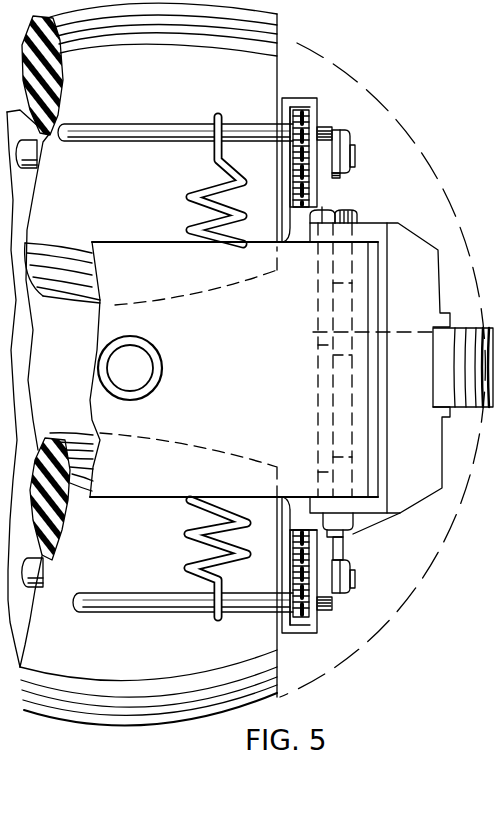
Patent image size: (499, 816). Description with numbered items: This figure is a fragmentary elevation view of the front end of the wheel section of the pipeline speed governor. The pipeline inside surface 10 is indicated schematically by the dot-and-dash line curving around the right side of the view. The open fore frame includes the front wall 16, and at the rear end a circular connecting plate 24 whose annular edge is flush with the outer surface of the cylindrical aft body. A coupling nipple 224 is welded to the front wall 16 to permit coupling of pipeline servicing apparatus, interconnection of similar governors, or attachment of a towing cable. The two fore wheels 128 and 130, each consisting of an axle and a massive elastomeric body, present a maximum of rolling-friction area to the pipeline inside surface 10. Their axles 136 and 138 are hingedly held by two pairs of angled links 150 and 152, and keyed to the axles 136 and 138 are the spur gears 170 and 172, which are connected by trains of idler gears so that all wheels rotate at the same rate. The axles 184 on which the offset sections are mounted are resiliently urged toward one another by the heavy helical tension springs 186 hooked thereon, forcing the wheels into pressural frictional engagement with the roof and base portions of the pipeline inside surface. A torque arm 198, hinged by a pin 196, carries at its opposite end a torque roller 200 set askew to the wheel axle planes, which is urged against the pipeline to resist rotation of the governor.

The pipeline inside surface 10 is at (392, 108).
The front wall 16 is at (234, 366).
The circular connecting plate 24 is at (370, 523).
The fore wheel 128 is at (139, 648).
The fore wheel 130 is at (144, 114).
The wheel axle 136 is at (357, 577).
The wheel axle 138 is at (356, 157).
The angled link 150 is at (322, 610).
The angled link 152 is at (317, 126).
The spur gear 170 is at (308, 555).
The spur gear 172 is at (310, 185).
The axle 184 is at (125, 143).
The helical tension spring 186 is at (211, 164).
The pin 196 is at (353, 218).
The torque arm 198 is at (424, 463).
The torque roller 200 is at (469, 388).
The coupling nipple 224 is at (158, 390).